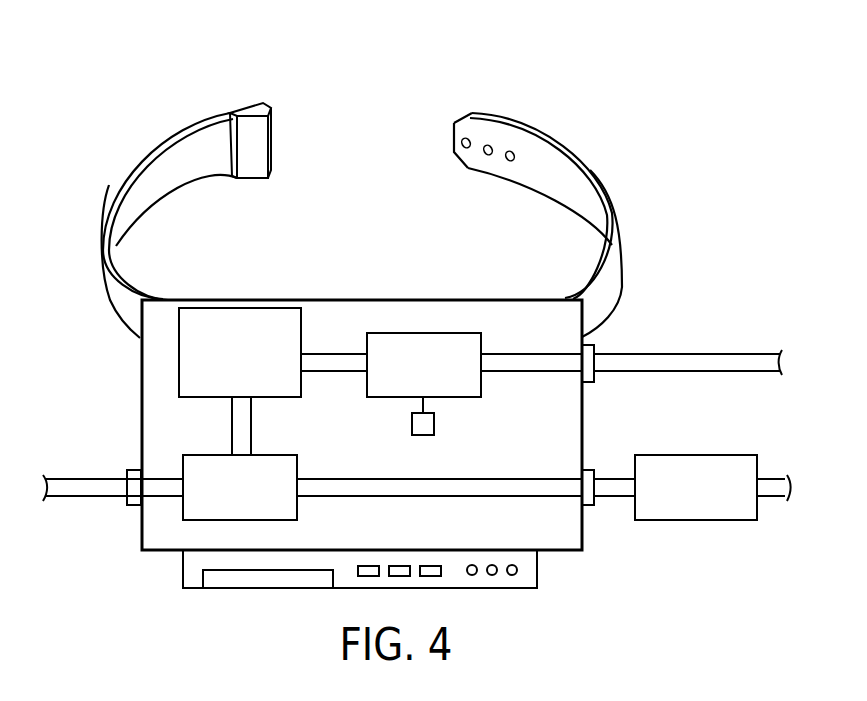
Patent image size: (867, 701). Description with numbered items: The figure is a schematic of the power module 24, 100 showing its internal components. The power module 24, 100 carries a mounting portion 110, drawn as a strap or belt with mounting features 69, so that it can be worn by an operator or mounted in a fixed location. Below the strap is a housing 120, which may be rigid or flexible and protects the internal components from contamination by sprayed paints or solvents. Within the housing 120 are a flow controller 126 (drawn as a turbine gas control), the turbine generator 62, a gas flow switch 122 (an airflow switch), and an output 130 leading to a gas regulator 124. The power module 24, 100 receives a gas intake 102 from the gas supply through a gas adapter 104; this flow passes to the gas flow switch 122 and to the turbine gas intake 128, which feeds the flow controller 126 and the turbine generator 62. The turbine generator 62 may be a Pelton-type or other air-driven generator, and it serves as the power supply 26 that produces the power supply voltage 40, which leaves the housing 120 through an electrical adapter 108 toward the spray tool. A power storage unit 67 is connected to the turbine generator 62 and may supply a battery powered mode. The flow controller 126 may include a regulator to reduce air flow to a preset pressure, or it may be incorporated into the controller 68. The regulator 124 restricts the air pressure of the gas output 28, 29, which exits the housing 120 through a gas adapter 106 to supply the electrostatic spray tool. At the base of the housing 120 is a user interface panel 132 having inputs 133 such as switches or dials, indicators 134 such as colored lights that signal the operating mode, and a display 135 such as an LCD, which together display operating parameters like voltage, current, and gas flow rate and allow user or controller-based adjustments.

The power module 100 is at (367, 188).
The mounting features 69 is at (120, 190).
The mounting portion 110 is at (458, 187).
The flow controller 126 is at (240, 308).
The turbine generator 62 is at (420, 333).
The power supply 26 is at (497, 320).
The power supply voltage 40 is at (676, 353).
The housing 120 is at (139, 371).
The gas output 28 is at (431, 489).
The gas line 29 is at (70, 478).
The controller 68 is at (161, 388).
The turbine gas intake 128 is at (252, 423).
The power storage unit 67 is at (438, 418).
The electrical adapter 108 is at (587, 383).
The gas regulator 124 is at (708, 455).
The output 130 is at (410, 477).
The gas intake 102 is at (88, 498).
The gas adapter 104 is at (128, 505).
The gas flow switch 122 is at (292, 521).
The inputs 133 is at (430, 565).
The gas adapter 106 is at (593, 505).
The user interface panel 132 is at (549, 583).
The power module 24 is at (375, 596).
The displays 135 is at (258, 590).
The indicators 134 is at (474, 576).